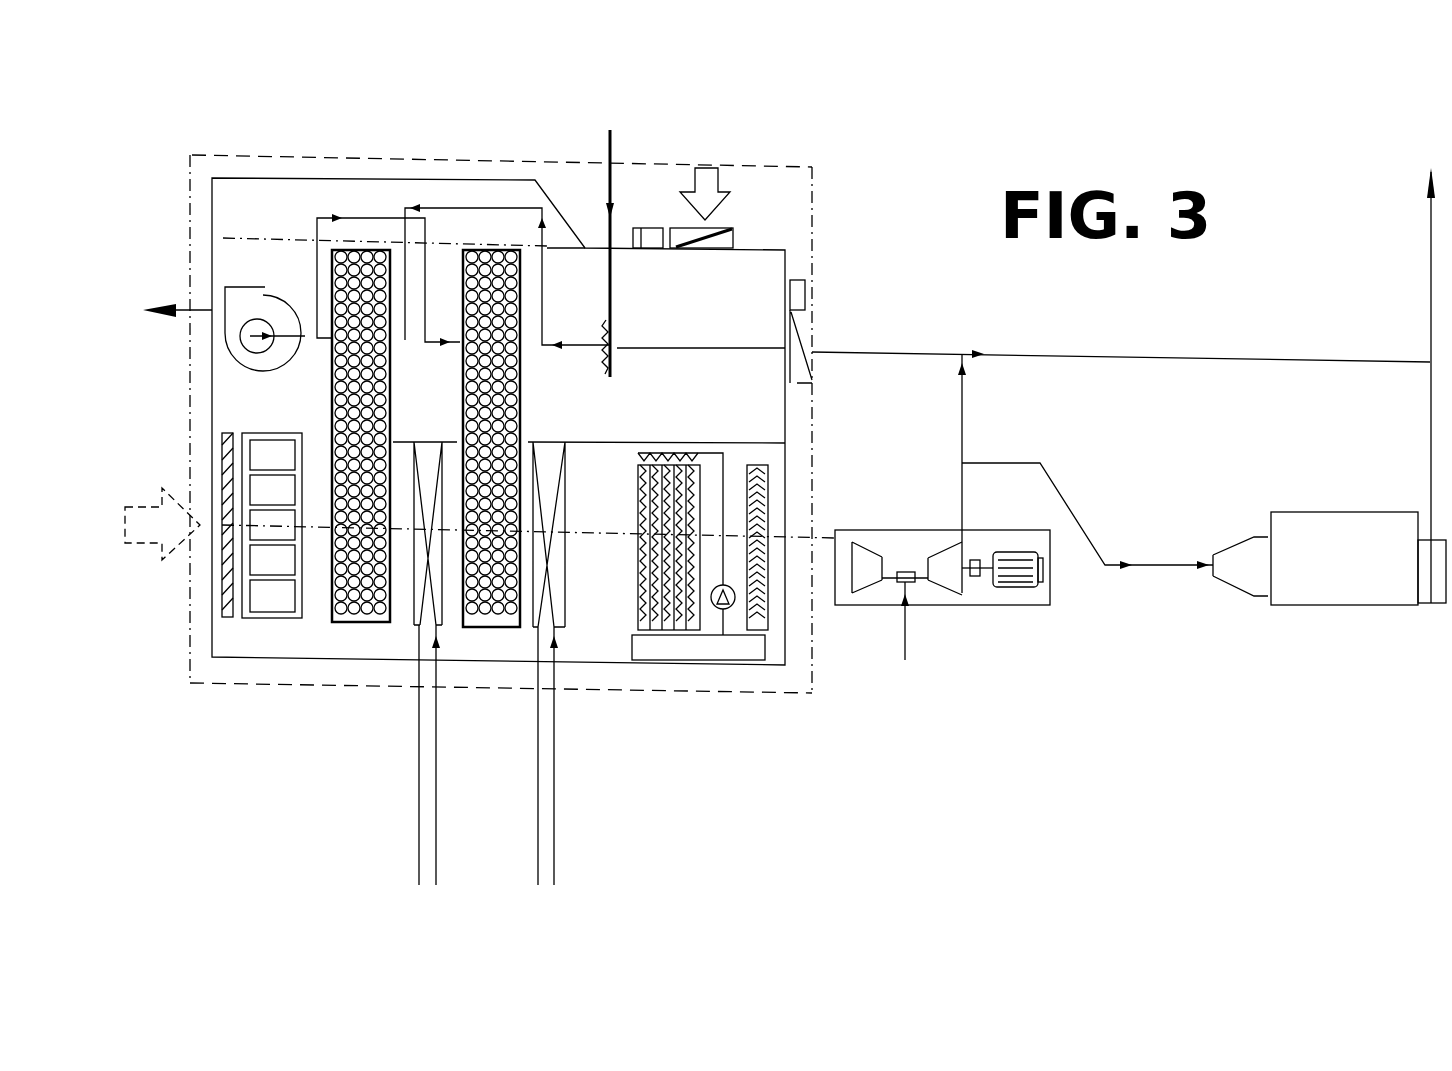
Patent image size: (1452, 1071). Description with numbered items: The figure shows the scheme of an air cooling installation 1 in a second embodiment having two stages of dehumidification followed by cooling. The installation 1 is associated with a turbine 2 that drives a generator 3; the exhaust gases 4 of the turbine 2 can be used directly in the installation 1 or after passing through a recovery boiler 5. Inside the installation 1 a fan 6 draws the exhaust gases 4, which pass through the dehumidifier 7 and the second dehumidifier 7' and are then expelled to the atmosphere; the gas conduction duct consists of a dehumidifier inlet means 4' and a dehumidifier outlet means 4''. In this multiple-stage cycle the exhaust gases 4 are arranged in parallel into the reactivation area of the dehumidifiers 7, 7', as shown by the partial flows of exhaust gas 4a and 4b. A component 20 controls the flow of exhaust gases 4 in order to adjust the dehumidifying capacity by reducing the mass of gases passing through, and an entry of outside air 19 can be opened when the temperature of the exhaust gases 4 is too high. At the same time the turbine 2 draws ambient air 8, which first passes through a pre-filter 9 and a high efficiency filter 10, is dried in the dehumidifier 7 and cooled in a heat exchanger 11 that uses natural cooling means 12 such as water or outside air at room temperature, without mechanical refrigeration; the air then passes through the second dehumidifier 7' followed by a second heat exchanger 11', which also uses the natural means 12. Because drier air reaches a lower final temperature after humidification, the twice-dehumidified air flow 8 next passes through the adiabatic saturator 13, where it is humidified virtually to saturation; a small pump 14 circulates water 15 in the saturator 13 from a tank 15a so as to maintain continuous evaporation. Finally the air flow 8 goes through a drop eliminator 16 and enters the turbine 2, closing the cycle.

The air cooling installation 1 is at (830, 212).
The turbine 2 is at (938, 588).
The generator 3 is at (1026, 590).
The exhaust gases 4 is at (798, 385).
The dehumidifier inlet means 4' is at (701, 319).
The dehumidifier outlet means 4'' is at (177, 272).
The partial flow of exhaust gas 4a is at (477, 208).
The partial flow of exhaust gas 4b is at (365, 218).
The recovery boiler 5 is at (1297, 512).
The fan 6 is at (259, 296).
The dehumidifier 7 is at (351, 486).
The second dehumidifier 7' is at (491, 487).
The ambient air 8 is at (155, 505).
The pre-filter 9 is at (229, 618).
The high efficiency filter 10 is at (267, 618).
The heat exchanger 11 is at (425, 508).
The second heat exchanger 11' is at (567, 509).
The natural cooling means 12 is at (420, 808).
The adiabatic saturator 13 is at (632, 500).
The pump 14 is at (730, 608).
The water 15 is at (732, 470).
The tank 15a is at (668, 660).
The drop eliminator 16 is at (765, 590).
The outside air 19 is at (700, 168).
The exhaust gas flow control component 20 is at (815, 338).